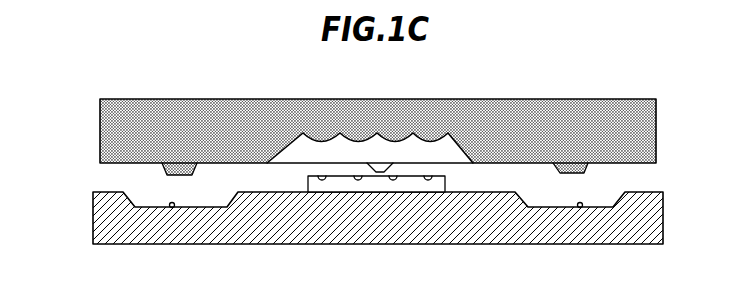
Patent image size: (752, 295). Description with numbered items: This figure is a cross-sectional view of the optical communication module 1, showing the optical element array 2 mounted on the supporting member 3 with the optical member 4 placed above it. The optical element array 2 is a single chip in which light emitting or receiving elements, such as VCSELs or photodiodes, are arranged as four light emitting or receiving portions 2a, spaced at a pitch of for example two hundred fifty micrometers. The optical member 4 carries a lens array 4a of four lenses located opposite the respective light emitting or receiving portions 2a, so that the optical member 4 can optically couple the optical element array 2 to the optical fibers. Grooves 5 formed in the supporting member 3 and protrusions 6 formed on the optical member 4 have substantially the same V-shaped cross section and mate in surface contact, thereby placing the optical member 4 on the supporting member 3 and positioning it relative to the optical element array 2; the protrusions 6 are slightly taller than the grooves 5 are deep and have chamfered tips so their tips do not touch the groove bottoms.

The optical communication module 1 is at (692, 99).
The optical element array 2 is at (303, 192).
The light emitting or receiving portions 2a is at (328, 192).
The supporting member 3 is at (93, 218).
The optical member 4 is at (351, 115).
The lens array 4a is at (302, 134).
The grooves 5 is at (171, 207).
The protrusions 6 is at (164, 170).